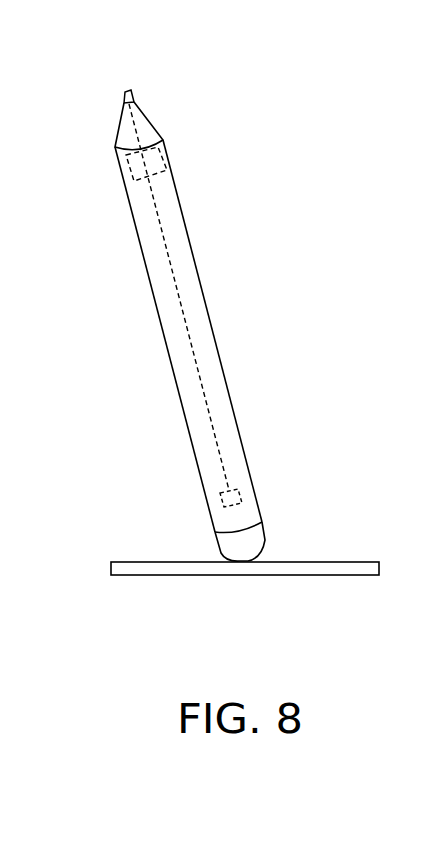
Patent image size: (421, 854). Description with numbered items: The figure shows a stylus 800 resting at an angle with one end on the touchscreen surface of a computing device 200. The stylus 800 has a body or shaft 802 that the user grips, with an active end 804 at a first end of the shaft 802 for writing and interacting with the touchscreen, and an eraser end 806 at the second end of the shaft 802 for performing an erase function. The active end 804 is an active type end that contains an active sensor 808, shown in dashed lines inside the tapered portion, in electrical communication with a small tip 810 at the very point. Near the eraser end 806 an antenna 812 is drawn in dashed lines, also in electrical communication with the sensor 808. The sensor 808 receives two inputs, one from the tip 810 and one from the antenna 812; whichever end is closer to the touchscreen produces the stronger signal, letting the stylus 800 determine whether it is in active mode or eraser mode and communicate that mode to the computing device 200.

The stylus 800 is at (222, 314).
The shaft 802 is at (203, 313).
The active end 804 is at (149, 134).
The eraser end 806 is at (262, 542).
The active sensor 808 is at (166, 166).
The tip 810 is at (131, 95).
The antenna 812 is at (243, 495).
The computing device 200 is at (352, 562).